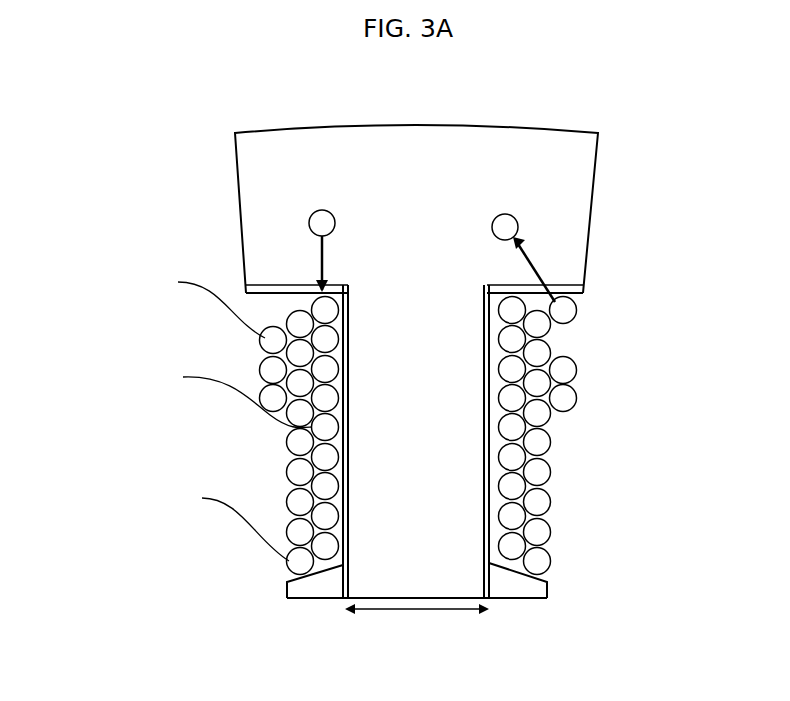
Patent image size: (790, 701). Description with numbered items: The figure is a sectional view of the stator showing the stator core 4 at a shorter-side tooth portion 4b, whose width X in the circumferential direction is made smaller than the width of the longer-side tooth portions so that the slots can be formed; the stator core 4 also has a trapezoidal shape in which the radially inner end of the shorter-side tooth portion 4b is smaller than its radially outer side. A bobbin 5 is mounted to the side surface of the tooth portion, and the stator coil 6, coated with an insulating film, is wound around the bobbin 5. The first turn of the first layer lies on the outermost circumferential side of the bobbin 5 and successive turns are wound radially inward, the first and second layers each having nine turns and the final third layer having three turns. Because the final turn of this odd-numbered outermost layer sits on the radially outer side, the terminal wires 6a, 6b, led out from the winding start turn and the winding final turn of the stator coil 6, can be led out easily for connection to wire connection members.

The stator core 4 is at (437, 157).
The shorter-side tooth portion 4b is at (415, 532).
The bobbin 5 is at (508, 585).
The stator coil 6 is at (567, 370).
The terminal wire 6a is at (315, 223).
The terminal wire 6b is at (512, 227).
The width of shorter-side tooth portion X is at (435, 605).